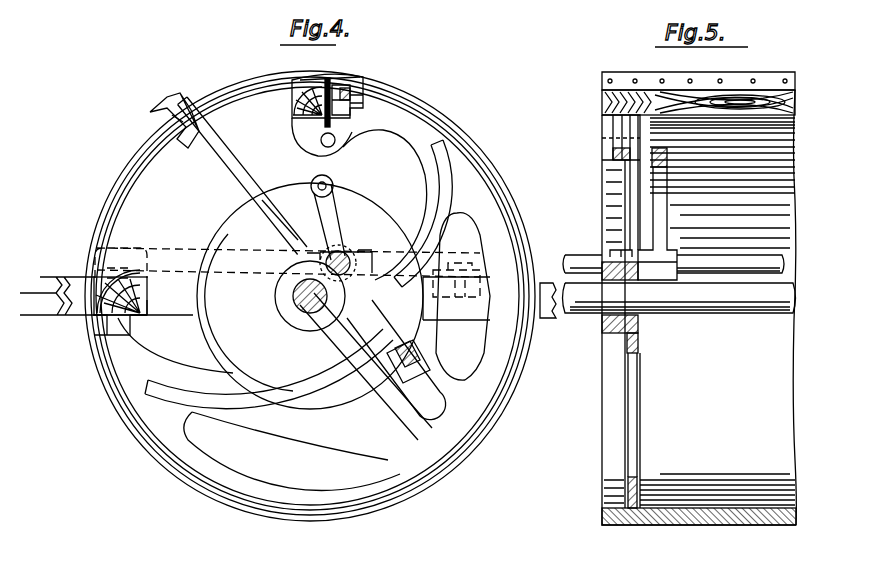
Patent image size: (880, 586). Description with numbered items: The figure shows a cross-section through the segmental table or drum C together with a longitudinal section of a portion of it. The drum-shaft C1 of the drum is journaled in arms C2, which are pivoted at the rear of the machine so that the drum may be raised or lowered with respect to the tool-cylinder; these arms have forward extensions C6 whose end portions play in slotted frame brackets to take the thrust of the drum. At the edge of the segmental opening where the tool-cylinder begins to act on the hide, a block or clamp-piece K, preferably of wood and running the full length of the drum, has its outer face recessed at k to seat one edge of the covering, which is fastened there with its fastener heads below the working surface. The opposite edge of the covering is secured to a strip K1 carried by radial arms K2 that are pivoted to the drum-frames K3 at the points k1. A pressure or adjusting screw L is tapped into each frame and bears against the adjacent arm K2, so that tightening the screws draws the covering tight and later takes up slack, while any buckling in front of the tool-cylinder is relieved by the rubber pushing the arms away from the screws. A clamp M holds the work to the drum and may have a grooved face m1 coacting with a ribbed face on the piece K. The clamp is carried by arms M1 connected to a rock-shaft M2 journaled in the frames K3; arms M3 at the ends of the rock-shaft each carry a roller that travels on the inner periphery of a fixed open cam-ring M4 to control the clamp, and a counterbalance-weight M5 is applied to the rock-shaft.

In FIG. 4, the segmental table or drum C is at (520, 193).
In FIG. 5, the segmental table or drum C is at (699, 298).
In FIG. 4, the drum-shaft C1 is at (297, 297).
In FIG. 5, the drum-shaft C1 is at (690, 318).
In FIG. 4, the arms C2 is at (546, 322).
In FIG. 4, the forward extensions C6 is at (95, 262).
In FIG. 4, the recess k is at (38, 303).
In FIG. 4, the block or clamp-piece K is at (143, 317).
In FIG. 4, the strip K1 is at (292, 100).
In FIG. 5, the strip K1 is at (750, 100).
In FIG. 4, the pivot points k1 is at (336, 137).
In FIG. 4, the radial arms K2 is at (306, 140).
In FIG. 5, the radial arms K2 is at (610, 138).
In FIG. 4, the drum-frames K3 is at (432, 182).
In FIG. 5, the drum-frames K3 is at (640, 424).
In FIG. 4, the pressure or adjusting screw L is at (345, 88).
In FIG. 4, the clamp M is at (172, 145).
In FIG. 4, the grooved face m1 is at (166, 128).
In FIG. 4, the arms M1 is at (268, 192).
In FIG. 5, the arms M1 is at (668, 223).
In FIG. 4, the rock-shaft M2 is at (303, 248).
In FIG. 5, the rock-shaft M2 is at (763, 266).
In FIG. 4, the arms M3 is at (330, 210).
In FIG. 4, the fixed open cam-ring M4 is at (225, 243).
In FIG. 4, the counterbalance-weight M5 is at (420, 368).